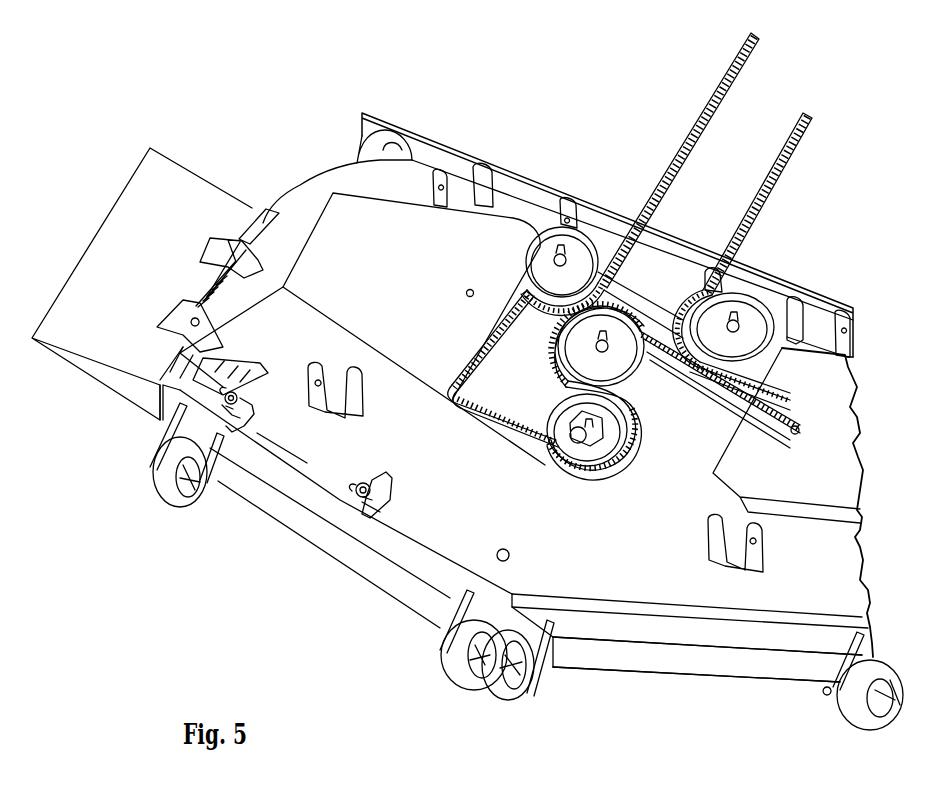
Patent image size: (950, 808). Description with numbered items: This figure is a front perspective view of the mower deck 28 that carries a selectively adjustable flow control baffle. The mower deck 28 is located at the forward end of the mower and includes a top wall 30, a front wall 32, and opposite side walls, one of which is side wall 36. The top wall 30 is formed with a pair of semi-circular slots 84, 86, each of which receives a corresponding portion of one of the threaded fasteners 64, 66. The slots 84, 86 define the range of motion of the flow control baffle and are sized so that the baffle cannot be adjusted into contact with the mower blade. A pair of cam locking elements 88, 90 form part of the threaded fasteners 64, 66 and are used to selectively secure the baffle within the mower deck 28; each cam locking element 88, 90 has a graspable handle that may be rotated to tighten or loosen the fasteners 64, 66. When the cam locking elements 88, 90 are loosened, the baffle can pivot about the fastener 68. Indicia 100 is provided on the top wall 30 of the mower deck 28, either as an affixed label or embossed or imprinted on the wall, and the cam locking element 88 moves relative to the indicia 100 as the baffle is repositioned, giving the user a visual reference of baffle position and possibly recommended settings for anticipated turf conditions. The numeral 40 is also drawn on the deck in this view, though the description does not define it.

The mower deck 28 is at (262, 527).
The top wall 30 is at (640, 573).
The front wall 32 is at (383, 537).
The side wall 36 is at (303, 185).
The discharge chute 40 is at (200, 188).
The threaded fastener 64 is at (257, 413).
The threaded fastener 66 is at (398, 504).
The fastener 68 is at (512, 537).
The semi-circular slot 84 is at (252, 393).
The semi-circular slot 86 is at (385, 475).
The cam locking element 88 is at (246, 400).
The cam locking element 90 is at (387, 500).
The indicia 100 is at (240, 357).